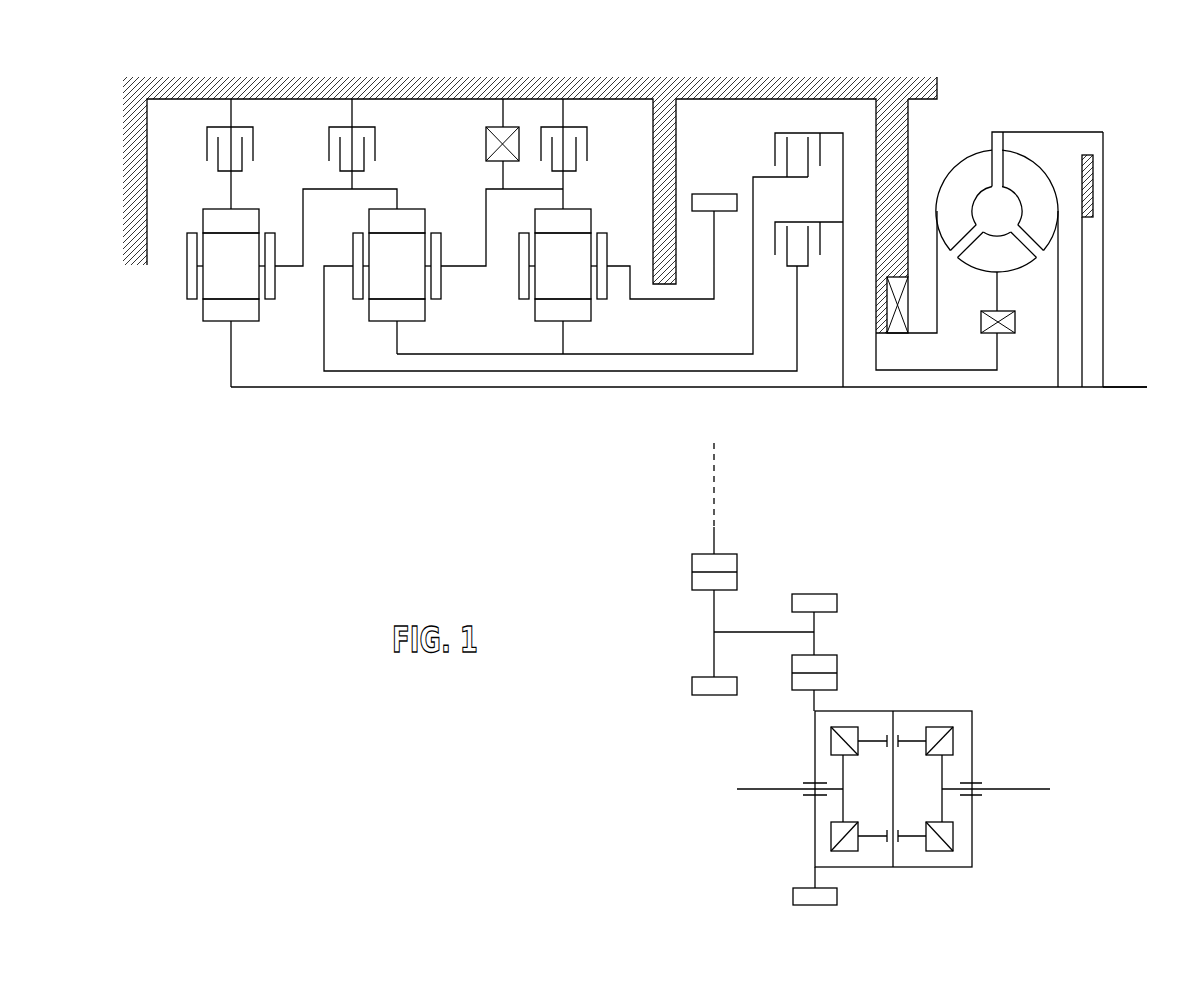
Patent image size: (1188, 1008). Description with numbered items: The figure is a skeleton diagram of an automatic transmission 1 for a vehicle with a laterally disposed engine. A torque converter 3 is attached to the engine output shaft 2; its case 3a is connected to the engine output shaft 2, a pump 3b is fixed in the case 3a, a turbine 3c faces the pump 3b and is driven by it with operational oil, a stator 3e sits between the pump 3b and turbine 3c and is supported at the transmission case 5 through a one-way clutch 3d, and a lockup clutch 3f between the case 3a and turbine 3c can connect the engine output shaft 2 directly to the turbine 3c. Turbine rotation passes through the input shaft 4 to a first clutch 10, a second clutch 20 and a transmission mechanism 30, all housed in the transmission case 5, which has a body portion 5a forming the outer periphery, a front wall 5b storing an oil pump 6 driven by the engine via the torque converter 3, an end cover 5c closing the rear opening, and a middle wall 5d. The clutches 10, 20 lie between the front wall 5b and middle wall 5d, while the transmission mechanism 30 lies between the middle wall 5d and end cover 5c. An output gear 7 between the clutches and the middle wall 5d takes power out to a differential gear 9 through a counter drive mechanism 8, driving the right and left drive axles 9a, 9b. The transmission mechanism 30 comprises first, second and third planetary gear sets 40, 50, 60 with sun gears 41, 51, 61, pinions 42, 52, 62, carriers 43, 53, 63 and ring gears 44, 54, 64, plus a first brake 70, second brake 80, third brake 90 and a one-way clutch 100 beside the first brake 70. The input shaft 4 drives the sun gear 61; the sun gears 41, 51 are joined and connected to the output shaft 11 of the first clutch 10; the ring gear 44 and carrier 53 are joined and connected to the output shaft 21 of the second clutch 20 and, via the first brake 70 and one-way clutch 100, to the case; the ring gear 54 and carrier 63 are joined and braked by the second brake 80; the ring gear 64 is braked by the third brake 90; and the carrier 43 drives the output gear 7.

The automatic transmission 1 is at (1101, 104).
The engine output shaft 2 is at (1118, 387).
The torque converter 3 is at (1035, 225).
The case 3a is at (1023, 130).
The pump 3b is at (950, 168).
The turbine 3c is at (1037, 163).
The one-way clutch 3d is at (1015, 331).
The stator 3e is at (1017, 275).
The lockup clutch 3f is at (1095, 188).
The input shaft 4 is at (899, 396).
The transmission case 5 is at (542, 198).
The body portion 5a is at (832, 78).
The front wall 5b is at (875, 280).
The end cover 5c is at (135, 177).
The middle wall 5d is at (677, 163).
The oil pump 6 is at (901, 333).
The output gear 7 is at (722, 193).
The counter drive mechanism 8 is at (818, 582).
The differential gear 9 is at (891, 774).
The drive axle 9a is at (753, 790).
The drive axle 9b is at (1027, 791).
The first clutch 10 is at (793, 178).
The output shaft 11 is at (752, 278).
The second clutch 20 is at (802, 270).
The output shaft 21 is at (797, 283).
The transmission mechanism 30 is at (599, 114).
The first planetary gear set 40 is at (558, 255).
The sun gear 41 is at (550, 323).
The pinion 42 is at (552, 283).
The carrier 43 is at (517, 275).
The ring gear 44 is at (535, 225).
The second planetary gear set 50 is at (386, 257).
The sun gear 51 is at (382, 320).
The pinion 52 is at (380, 285).
The carrier 53 is at (353, 283).
The ring gear 54 is at (367, 223).
The third planetary gear set 60 is at (230, 243).
The sun gear 61 is at (222, 313).
The pinion 62 is at (215, 277).
The carrier 63 is at (185, 273).
The ring gear 64 is at (202, 220).
The first brake 70 is at (588, 150).
The second brake 80 is at (377, 148).
The third brake 90 is at (257, 147).
The one-way clutch 100 is at (485, 140).